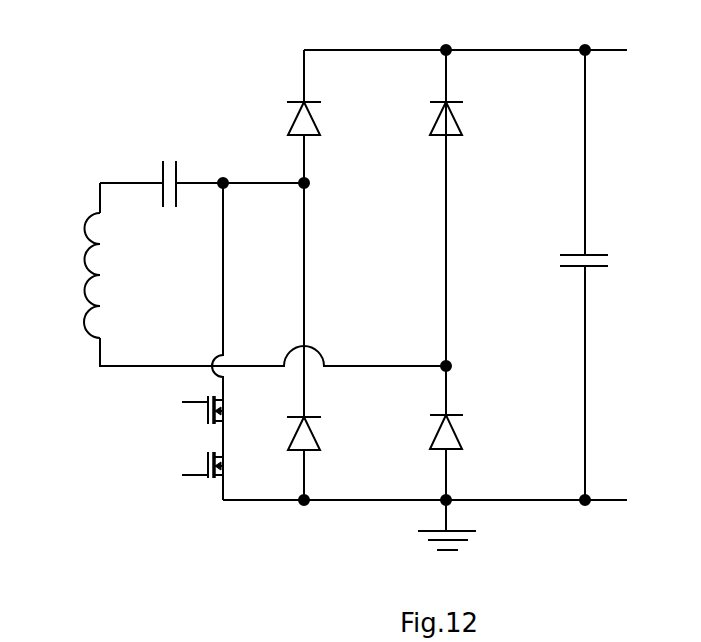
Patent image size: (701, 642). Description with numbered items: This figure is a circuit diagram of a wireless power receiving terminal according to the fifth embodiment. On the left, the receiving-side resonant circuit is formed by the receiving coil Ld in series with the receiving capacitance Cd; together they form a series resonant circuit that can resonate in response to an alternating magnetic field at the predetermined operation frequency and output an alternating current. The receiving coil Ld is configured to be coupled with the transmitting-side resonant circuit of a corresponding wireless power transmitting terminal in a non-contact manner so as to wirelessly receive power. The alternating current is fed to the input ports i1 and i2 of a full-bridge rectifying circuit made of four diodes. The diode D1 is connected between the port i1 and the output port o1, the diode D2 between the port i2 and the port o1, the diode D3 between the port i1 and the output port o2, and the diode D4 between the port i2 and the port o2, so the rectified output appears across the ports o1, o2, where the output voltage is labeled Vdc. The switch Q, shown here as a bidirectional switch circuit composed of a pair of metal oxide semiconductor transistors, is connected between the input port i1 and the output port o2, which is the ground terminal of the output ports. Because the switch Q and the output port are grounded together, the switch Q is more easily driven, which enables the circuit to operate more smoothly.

The receiving coil Ld is at (62, 275).
The receiving capacitance Cd is at (174, 162).
The switch Q is at (181, 437).
The diode D1 is at (333, 118).
The diode D2 is at (473, 118).
The diode D3 is at (333, 434).
The diode D4 is at (474, 433).
The element Vdc is at (618, 263).
The port of the input ports i1 is at (283, 186).
The port of the input ports i2 is at (466, 366).
The port of the output ports o1 is at (521, 29).
The port of the output ports o2 is at (451, 517).